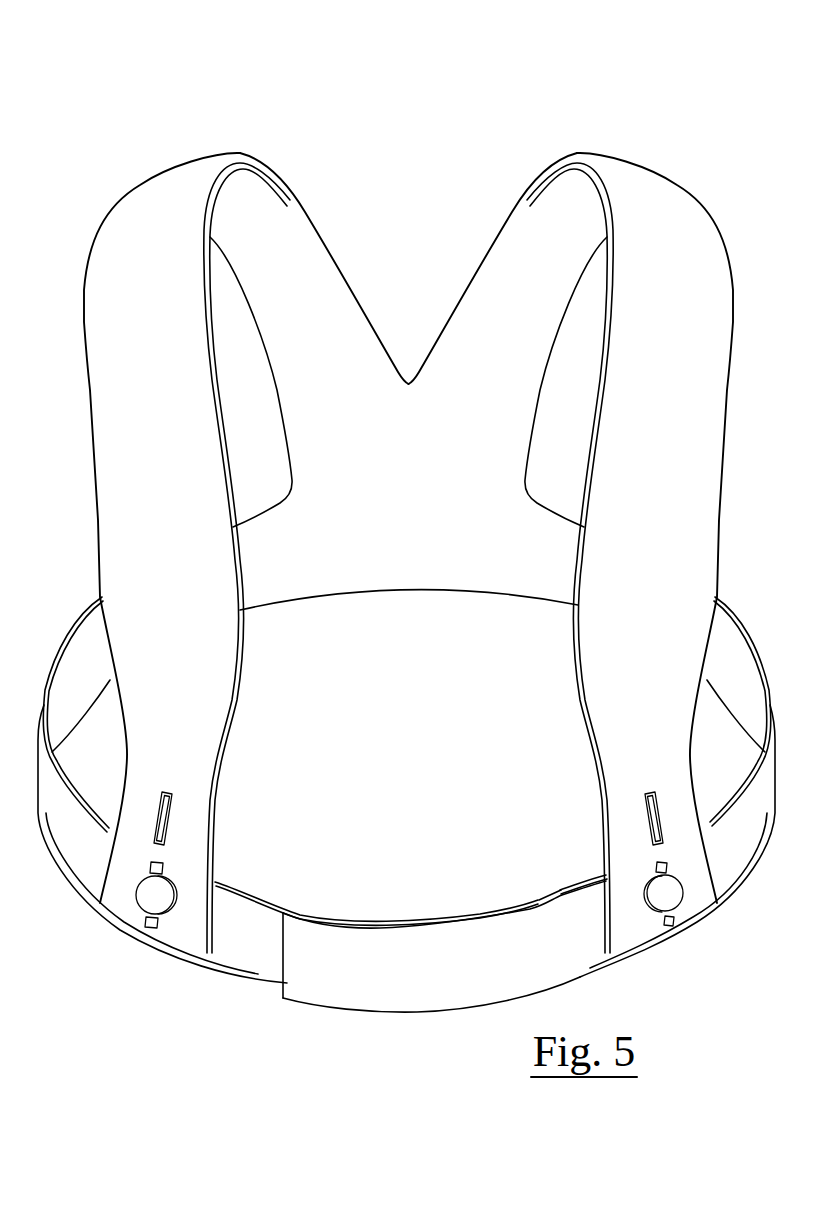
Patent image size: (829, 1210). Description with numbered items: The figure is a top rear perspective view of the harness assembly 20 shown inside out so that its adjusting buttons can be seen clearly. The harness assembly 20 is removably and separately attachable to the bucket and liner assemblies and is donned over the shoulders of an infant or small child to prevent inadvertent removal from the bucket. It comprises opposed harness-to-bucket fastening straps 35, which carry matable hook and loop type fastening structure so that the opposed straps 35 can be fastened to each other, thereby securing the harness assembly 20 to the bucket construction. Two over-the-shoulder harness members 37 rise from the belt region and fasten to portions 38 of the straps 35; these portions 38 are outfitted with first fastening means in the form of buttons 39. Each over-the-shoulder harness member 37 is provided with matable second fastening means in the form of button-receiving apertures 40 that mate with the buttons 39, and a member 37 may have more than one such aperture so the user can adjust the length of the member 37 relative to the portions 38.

The harness assembly 20 is at (655, 72).
The harness-to-bucket fastening straps 35 is at (412, 913).
The over-the-shoulder harness members 37 is at (240, 153).
The portions of the straps 38 is at (257, 893).
The buttons 39 is at (155, 897).
The button-receiving apertures 40 is at (160, 865).